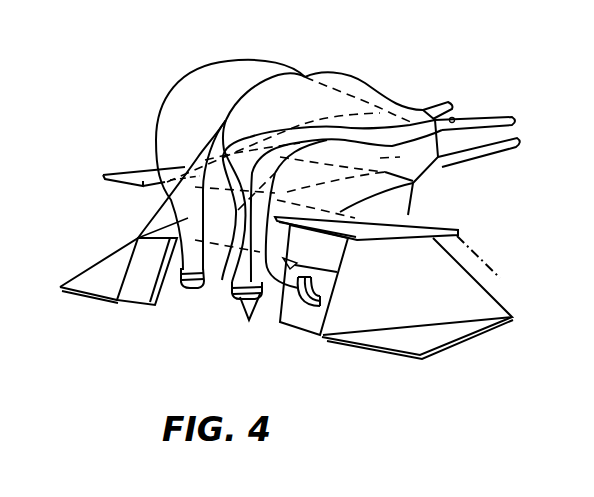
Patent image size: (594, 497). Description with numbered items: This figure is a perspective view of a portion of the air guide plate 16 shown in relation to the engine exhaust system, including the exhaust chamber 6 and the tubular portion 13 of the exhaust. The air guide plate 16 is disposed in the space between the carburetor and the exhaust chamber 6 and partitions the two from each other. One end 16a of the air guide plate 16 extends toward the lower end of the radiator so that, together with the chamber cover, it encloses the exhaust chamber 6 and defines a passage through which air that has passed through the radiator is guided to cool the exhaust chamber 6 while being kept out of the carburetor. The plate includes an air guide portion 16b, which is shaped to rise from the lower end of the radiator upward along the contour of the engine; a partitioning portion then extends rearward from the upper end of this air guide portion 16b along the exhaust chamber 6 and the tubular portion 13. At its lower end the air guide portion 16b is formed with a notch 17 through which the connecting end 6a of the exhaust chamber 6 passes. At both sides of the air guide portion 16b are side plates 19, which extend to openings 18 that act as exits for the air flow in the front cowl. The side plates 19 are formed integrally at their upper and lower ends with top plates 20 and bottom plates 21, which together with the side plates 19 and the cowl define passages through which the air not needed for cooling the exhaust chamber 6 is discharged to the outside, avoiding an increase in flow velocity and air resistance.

The exhaust chamber 6 is at (229, 82).
The connecting end 6a is at (215, 240).
The tubular portion 13 is at (410, 132).
The air guide plate 16 is at (413, 195).
The one end 16a is at (131, 302).
The air guide portion 16b is at (152, 219).
The notch 17 is at (158, 299).
The openings 18 is at (500, 278).
The side plates 19 is at (373, 292).
The top plates 20 is at (136, 174).
The bottom plates 21 is at (92, 280).